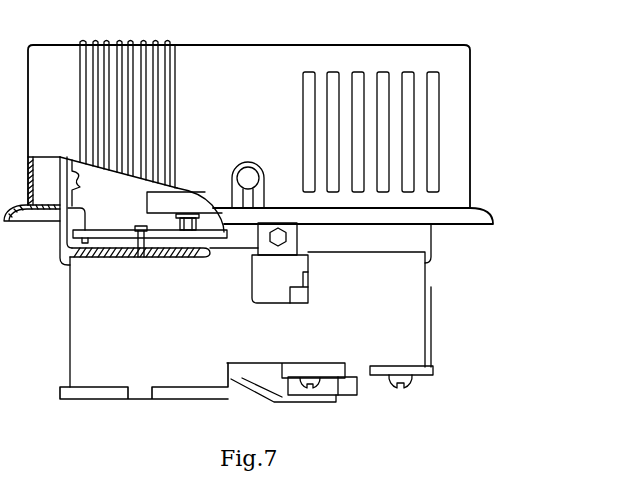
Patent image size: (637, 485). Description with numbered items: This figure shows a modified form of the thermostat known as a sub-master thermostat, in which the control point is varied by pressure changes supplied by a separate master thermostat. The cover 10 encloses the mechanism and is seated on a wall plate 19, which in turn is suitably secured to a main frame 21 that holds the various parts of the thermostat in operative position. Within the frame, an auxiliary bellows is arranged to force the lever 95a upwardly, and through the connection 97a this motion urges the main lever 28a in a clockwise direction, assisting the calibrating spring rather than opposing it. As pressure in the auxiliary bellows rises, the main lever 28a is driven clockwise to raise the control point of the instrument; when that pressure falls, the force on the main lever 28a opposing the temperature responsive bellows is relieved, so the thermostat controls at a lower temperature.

The cover 10 is at (280, 52).
The wall plate 19 is at (490, 215).
The main lever 28a is at (153, 200).
The connection 97a is at (178, 222).
The lever 95a is at (217, 250).
The main frame 21 is at (134, 321).